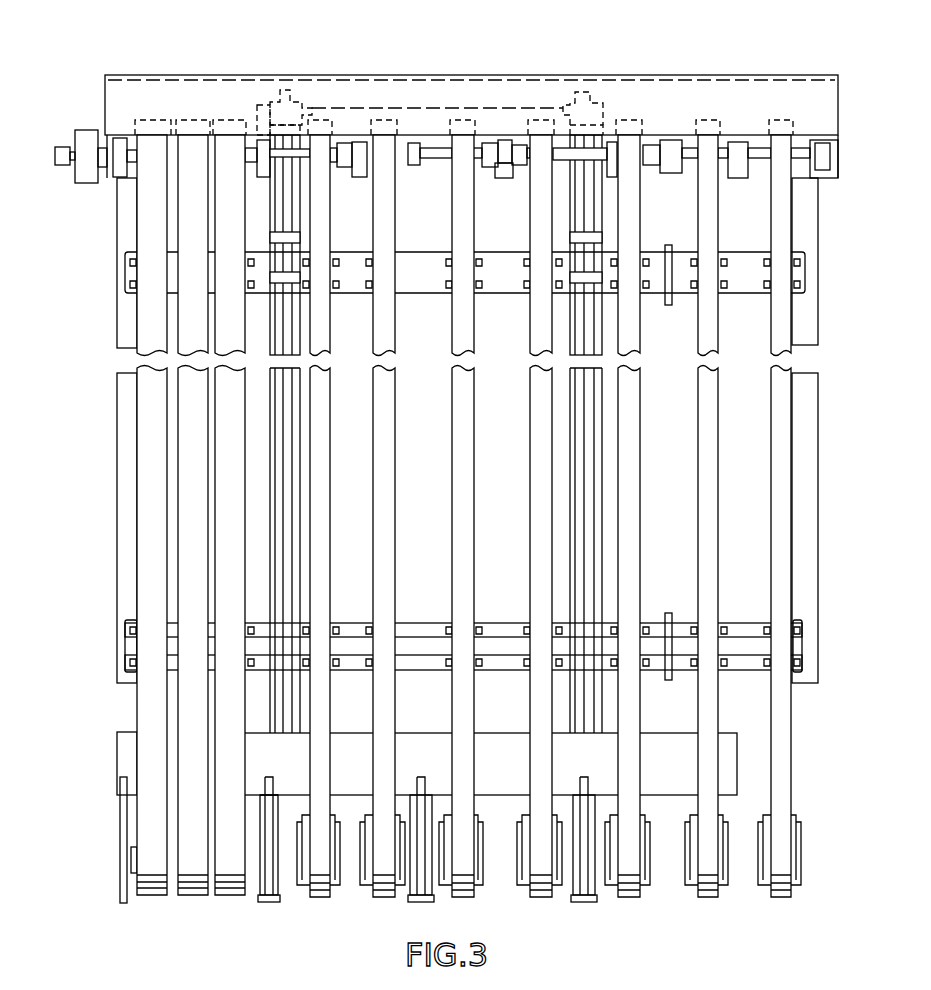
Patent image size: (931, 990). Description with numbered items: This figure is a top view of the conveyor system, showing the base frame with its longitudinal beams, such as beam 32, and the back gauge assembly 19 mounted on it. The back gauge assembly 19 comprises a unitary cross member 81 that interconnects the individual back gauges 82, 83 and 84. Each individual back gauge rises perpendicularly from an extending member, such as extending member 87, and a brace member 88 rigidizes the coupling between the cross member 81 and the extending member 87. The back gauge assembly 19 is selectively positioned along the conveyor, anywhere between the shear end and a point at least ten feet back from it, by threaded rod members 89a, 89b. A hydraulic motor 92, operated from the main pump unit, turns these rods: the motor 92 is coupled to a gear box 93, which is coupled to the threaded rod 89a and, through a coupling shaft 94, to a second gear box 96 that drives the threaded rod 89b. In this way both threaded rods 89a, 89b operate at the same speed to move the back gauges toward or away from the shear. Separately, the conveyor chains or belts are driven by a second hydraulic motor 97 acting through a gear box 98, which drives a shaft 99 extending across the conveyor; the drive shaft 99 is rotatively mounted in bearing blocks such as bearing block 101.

The hydraulic motor 92 is at (262, 105).
The gear box 93 is at (294, 102).
The coupling shaft 94 is at (437, 108).
The second gear box 96 is at (602, 108).
The hydraulic motor 97 is at (62, 165).
The gear box 98 is at (87, 130).
The drive shaft 99 is at (801, 148).
The bearing block 101 is at (820, 170).
The threaded rod member 89a is at (290, 214).
The threaded rod member 89b is at (587, 212).
The longitudinal beam 32 is at (810, 413).
The unitary cross member 81 is at (509, 771).
The back gauge 82 is at (306, 837).
The back gauge 83 is at (430, 832).
The back gauge 84 is at (585, 903).
The extending member 87 is at (285, 800).
The brace member 88 is at (270, 782).
The back gauge assembly 19 is at (431, 768).